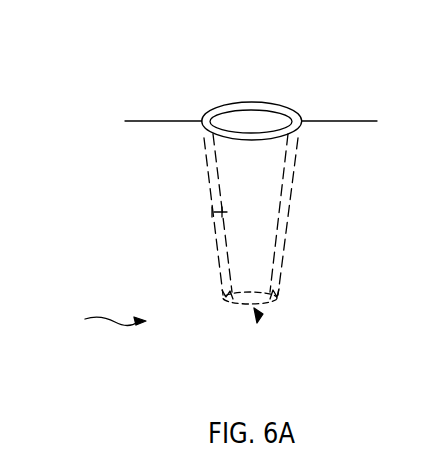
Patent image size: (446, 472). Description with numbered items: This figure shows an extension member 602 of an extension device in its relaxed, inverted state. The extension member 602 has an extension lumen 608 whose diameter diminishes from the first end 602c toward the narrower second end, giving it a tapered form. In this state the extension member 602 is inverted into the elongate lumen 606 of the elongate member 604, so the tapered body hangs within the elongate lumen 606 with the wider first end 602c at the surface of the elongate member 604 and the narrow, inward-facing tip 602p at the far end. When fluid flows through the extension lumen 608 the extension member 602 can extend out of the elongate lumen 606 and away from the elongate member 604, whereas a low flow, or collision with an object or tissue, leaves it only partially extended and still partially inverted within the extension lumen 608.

The extension member 602 is at (283, 276).
The first end 602c is at (289, 107).
The container tip / point 602p is at (260, 325).
The elongate member 604 is at (340, 121).
The elongate lumen 606 is at (99, 322).
The extension lumen 608 is at (210, 212).